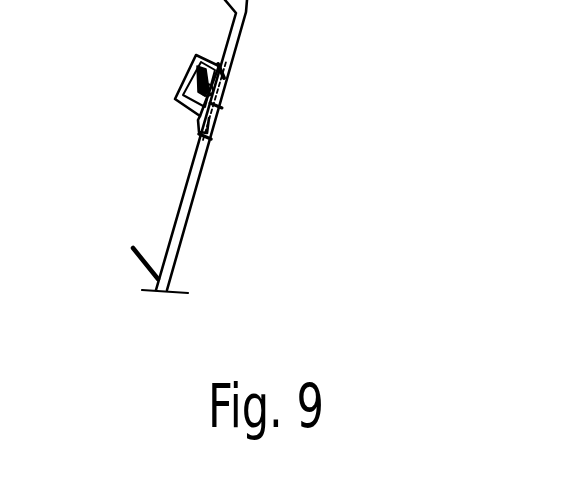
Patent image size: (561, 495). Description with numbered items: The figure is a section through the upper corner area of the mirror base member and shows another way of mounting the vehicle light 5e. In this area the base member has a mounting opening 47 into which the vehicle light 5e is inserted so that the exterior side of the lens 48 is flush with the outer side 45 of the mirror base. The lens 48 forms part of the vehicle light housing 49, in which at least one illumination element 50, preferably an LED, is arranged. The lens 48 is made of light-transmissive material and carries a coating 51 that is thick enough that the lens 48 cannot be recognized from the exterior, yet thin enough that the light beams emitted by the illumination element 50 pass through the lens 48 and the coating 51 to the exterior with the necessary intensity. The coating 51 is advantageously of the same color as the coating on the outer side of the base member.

The outer side 45 is at (182, 196).
The mounting opening 47 is at (204, 138).
The lens 48 is at (221, 113).
The vehicle light housing 49 is at (175, 99).
The illumination element 50 is at (232, 73).
The coating 51 is at (226, 104).
The vehicle light 5e is at (233, 95).